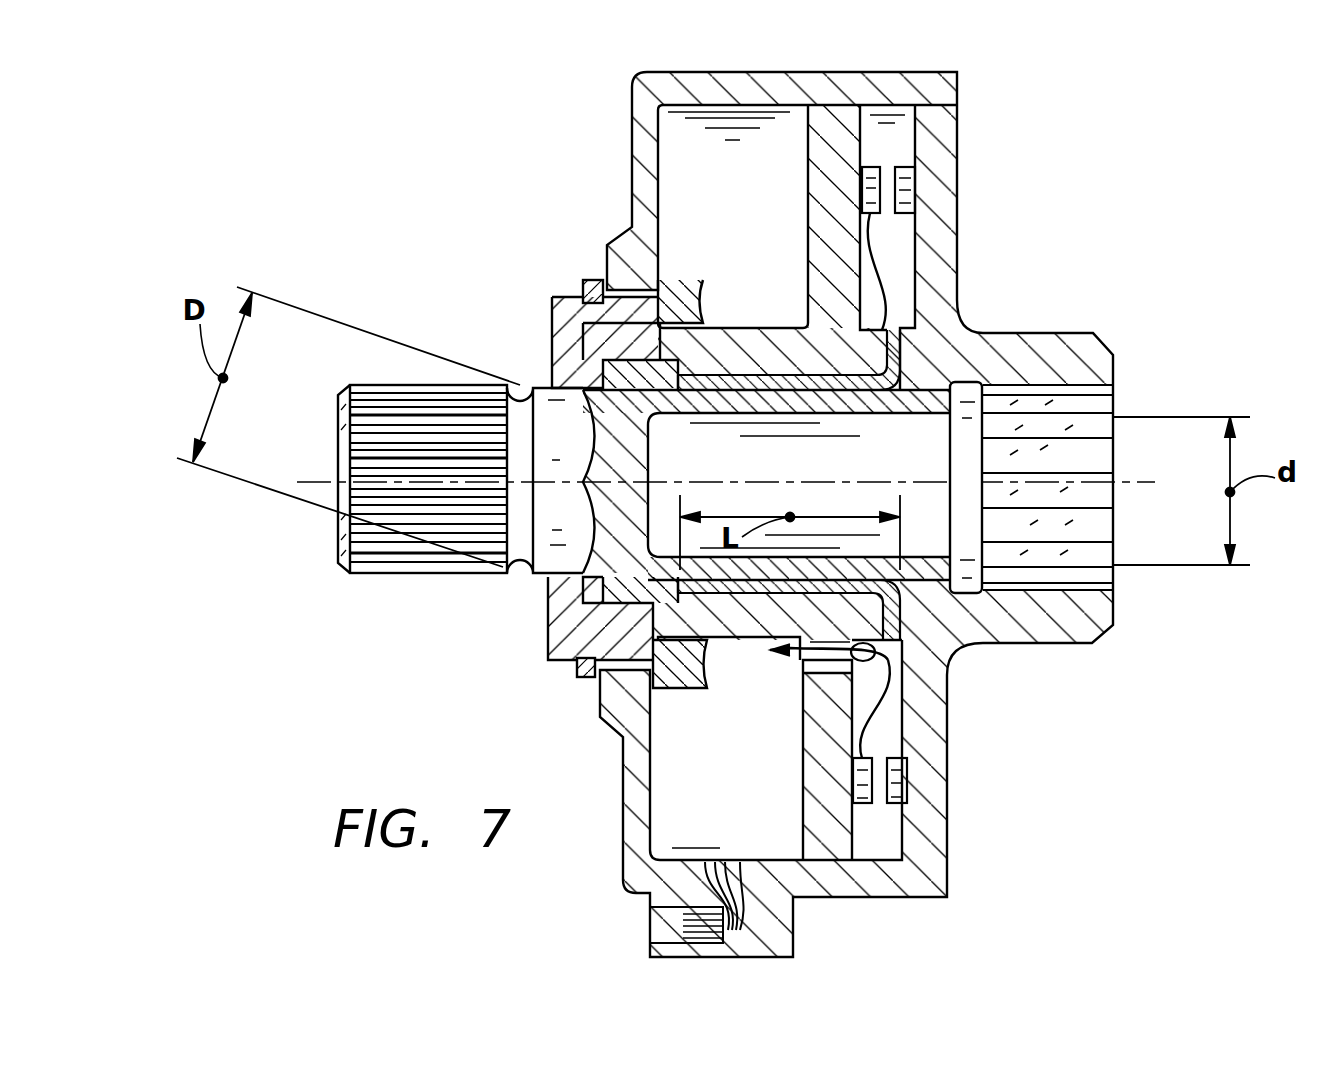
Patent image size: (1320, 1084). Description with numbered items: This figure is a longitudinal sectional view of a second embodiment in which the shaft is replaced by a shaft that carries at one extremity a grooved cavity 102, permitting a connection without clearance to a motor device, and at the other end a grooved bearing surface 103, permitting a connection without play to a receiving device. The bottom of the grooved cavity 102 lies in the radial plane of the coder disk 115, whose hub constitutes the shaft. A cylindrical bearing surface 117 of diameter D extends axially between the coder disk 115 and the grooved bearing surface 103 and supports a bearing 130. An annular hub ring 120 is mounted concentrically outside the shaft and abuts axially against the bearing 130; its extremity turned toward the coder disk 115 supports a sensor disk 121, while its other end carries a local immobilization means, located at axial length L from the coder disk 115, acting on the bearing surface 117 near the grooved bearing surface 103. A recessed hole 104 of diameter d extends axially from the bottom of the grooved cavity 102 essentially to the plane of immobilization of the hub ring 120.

The grooved cavity 102 is at (1100, 577).
The grooved bearing surface 103 is at (422, 560).
The recessed hole 104 is at (896, 414).
The coder disk 115 is at (938, 770).
The cylindrical bearing surface 117 is at (718, 386).
The annular hub ring 120 is at (738, 640).
The sensor disk 121 is at (802, 790).
The bearing 130 is at (784, 383).